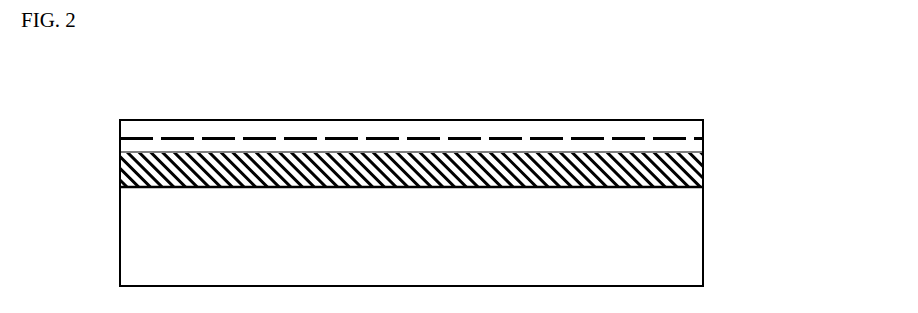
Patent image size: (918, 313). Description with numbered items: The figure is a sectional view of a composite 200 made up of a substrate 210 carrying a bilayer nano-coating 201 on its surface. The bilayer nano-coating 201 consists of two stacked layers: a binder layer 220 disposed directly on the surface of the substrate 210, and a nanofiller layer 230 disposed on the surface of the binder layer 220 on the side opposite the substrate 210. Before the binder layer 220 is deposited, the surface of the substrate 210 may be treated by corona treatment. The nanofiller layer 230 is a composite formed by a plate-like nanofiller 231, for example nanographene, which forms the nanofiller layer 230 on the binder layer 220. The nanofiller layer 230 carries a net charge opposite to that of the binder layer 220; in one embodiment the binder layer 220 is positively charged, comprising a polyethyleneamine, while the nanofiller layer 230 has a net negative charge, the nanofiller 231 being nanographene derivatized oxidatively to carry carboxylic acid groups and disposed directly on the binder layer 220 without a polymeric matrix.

The composite 200 is at (113, 120).
The bilayer nano-coating 201 is at (795, 120).
The substrate 210 is at (717, 187).
The binder layer 220 is at (717, 153).
The nanofiller layer 230 is at (717, 120).
The plate-like nanofiller 231 is at (553, 136).